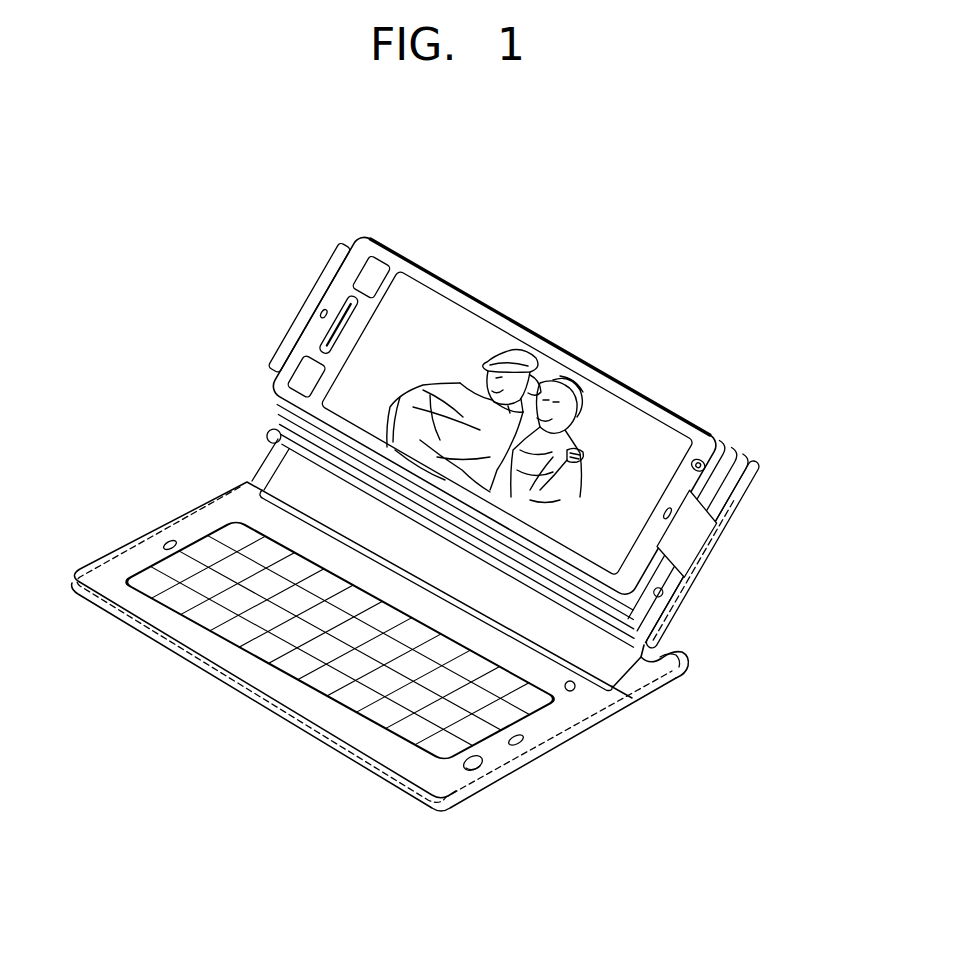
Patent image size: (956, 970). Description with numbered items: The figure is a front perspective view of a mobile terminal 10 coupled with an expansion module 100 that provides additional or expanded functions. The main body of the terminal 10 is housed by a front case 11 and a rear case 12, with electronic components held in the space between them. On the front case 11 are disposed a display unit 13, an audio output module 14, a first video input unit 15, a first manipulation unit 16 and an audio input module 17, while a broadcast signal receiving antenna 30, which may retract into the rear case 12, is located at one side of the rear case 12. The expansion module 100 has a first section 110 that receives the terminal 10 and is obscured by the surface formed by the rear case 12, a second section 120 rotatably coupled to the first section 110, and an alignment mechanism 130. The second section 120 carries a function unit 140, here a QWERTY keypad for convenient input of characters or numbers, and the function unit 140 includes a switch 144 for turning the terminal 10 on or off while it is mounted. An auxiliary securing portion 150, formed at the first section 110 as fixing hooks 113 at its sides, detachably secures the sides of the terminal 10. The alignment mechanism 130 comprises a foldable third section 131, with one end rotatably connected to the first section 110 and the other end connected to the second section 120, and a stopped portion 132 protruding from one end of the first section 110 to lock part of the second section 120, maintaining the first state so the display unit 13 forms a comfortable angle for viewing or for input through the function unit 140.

The expansion module 100 is at (126, 488).
The mobile terminal 10 is at (640, 373).
The front case 11 is at (455, 512).
The rear case 12 is at (452, 535).
The display unit 13 is at (457, 315).
The audio output module 14 is at (683, 531).
The first video input unit 15 is at (698, 465).
The first manipulation unit 16 is at (339, 324).
The audio input module 17 is at (323, 314).
The broadcast signal receiving antenna 30 is at (658, 592).
The first section 110 is at (686, 545).
The fixing hooks 113 is at (309, 307).
The second section 120 is at (560, 722).
The alignment mechanism 130 is at (652, 675).
The third section 131 is at (682, 668).
The stopped portion 132 is at (273, 468).
The function unit 140 is at (250, 653).
The switch 144 is at (574, 690).
The auxiliary securing portion 150 is at (256, 352).